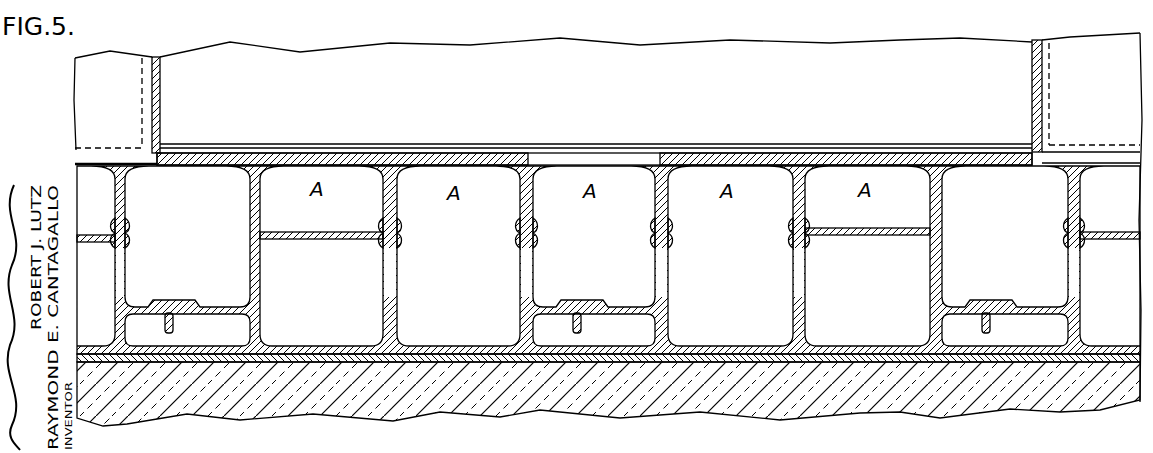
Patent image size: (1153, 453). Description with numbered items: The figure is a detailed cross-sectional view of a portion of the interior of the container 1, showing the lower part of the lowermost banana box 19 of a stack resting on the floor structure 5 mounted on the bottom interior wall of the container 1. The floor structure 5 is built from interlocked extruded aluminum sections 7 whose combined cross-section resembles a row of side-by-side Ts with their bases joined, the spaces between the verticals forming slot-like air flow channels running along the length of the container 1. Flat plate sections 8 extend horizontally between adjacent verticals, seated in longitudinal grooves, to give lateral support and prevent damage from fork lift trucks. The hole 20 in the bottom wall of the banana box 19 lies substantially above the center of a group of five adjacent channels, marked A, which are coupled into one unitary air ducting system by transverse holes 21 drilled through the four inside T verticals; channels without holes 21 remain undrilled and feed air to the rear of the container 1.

The container 1 is at (472, 392).
The floor grating structure 5 is at (540, 222).
The extruded section 7 is at (122, 213).
The extruded section 8 is at (95, 243).
The banana box 19 is at (173, 63).
The hole 20 is at (529, 162).
The transverse hole 21 is at (530, 256).